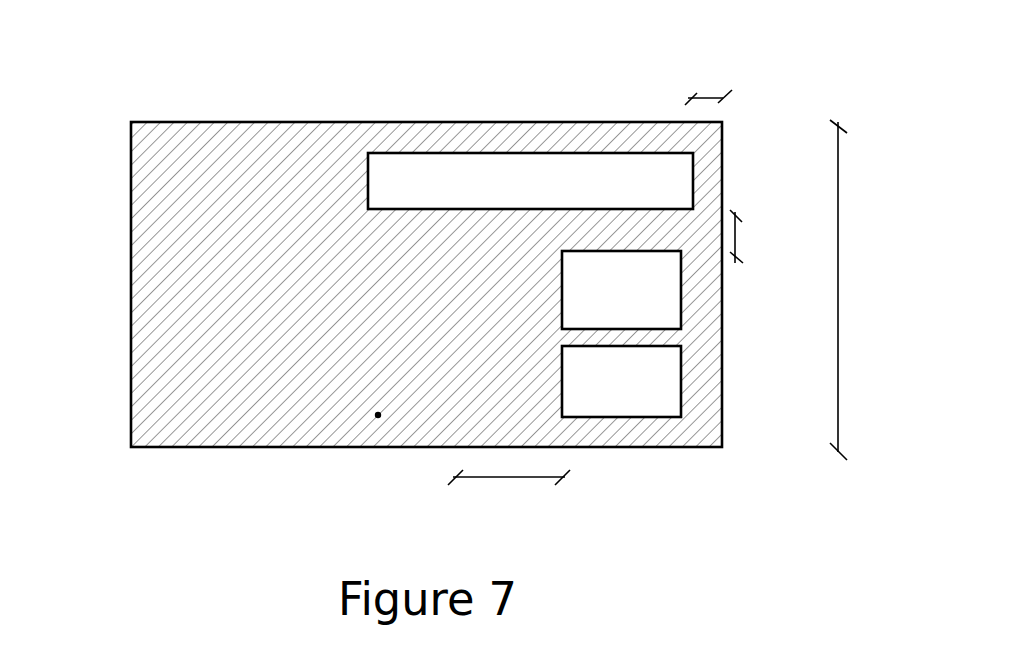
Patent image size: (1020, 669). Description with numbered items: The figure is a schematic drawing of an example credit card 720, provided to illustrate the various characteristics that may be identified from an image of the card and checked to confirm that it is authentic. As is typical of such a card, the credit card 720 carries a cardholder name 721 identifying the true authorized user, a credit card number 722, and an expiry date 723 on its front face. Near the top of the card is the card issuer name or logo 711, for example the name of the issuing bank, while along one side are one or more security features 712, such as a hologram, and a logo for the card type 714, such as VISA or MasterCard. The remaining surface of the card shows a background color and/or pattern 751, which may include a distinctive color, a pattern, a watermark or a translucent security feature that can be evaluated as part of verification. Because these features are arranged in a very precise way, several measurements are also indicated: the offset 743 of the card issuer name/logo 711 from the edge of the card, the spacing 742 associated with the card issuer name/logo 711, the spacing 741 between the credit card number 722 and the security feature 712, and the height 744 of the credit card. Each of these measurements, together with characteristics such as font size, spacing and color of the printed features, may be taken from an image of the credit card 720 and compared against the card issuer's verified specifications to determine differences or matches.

The card issuer name or logo 711 is at (473, 150).
The security feature 712 is at (682, 287).
The card type logo 714 is at (682, 393).
The credit card 720 is at (310, 153).
The cardholder name 721 is at (163, 275).
The credit card number 722 is at (160, 335).
The expiry date 723 is at (160, 375).
The spacing 741 is at (498, 477).
The spacing 742 is at (737, 238).
The offset 743 is at (707, 97).
The height 744 is at (838, 188).
The background color and/or pattern 751 is at (378, 420).